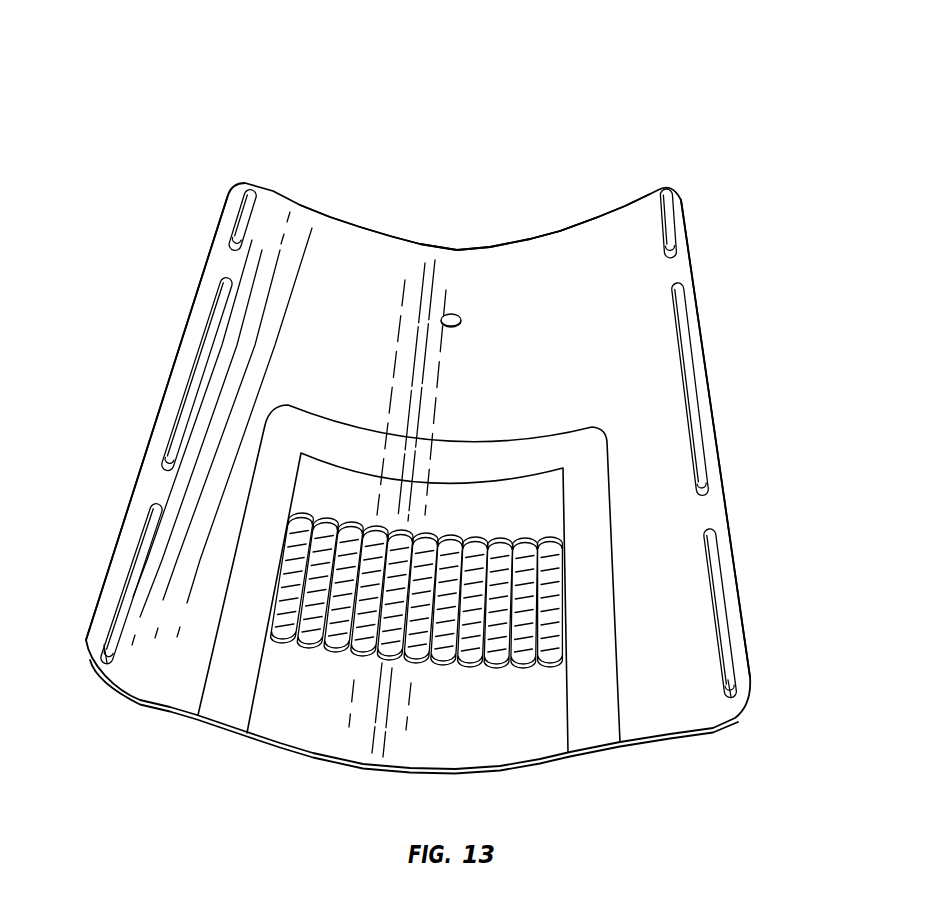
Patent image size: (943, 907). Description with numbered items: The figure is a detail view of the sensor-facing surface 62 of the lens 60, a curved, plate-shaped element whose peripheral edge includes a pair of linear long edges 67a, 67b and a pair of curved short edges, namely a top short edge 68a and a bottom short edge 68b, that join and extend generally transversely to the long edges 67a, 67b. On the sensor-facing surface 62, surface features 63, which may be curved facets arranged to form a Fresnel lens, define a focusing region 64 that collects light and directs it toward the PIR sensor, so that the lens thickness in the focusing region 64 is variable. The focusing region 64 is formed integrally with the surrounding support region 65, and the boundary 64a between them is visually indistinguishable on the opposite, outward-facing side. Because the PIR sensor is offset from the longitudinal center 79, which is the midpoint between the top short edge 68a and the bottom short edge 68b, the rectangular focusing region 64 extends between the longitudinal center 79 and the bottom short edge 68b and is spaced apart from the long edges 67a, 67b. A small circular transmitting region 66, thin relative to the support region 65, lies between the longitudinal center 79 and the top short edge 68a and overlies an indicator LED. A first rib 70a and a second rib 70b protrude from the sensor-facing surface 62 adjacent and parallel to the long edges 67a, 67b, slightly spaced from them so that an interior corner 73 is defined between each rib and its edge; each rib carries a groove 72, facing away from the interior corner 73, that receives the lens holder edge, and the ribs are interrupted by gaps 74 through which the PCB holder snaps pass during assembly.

The lens 60 is at (124, 126).
The sensor-facing surface 62 is at (382, 258).
The surface features 63 is at (528, 540).
The focusing region 64 is at (277, 652).
The boundary 64a is at (203, 675).
The support region 65 is at (320, 224).
The transmitting region 66 is at (452, 312).
The first long edge 67a is at (705, 365).
The second long edge 67b is at (165, 393).
The top short edge 68a is at (598, 217).
The bottom short edge 68b is at (683, 737).
The first rib 70a is at (680, 317).
The second rib 70b is at (150, 505).
The groove 72 is at (258, 201).
The interior corner 73 is at (100, 632).
The gaps 74 is at (222, 265).
The longitudinal center 79 is at (455, 402).